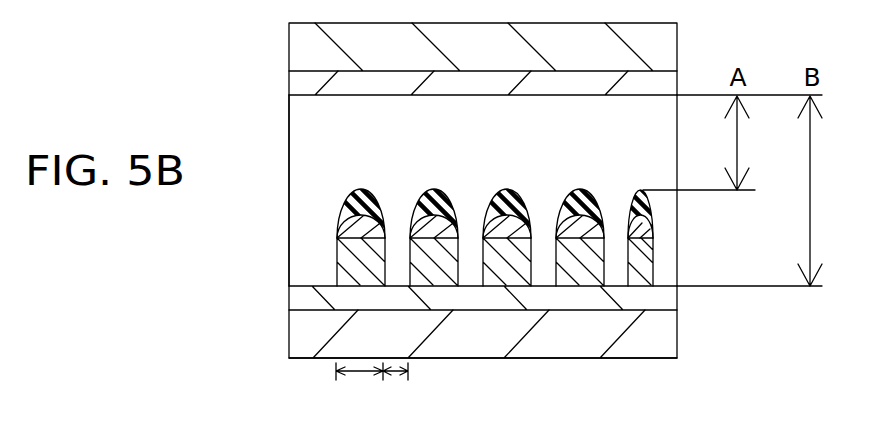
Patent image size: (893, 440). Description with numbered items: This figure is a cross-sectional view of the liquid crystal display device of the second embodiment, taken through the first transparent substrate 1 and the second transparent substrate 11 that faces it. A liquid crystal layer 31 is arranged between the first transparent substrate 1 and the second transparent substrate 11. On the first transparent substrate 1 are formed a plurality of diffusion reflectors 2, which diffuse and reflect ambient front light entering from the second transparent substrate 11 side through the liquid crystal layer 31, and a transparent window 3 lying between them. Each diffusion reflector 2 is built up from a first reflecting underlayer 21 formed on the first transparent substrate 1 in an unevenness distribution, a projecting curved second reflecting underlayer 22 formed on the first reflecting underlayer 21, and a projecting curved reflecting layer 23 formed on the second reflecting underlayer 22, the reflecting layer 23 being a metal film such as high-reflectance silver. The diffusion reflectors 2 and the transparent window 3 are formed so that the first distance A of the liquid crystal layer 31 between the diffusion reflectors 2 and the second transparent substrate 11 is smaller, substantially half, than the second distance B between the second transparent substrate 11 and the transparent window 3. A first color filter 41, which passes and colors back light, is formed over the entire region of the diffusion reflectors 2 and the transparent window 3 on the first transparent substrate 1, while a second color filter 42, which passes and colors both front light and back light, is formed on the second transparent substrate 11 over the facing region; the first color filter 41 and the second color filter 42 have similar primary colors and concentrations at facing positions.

The first transparent substrate 1 is at (302, 340).
The diffusion reflector 2 is at (359, 389).
The transparent window 3 is at (395, 389).
The second transparent substrate 11 is at (308, 48).
The first reflecting underlayer 21 is at (347, 262).
The second reflecting underlayer 22 is at (338, 229).
The reflecting layer 23 is at (343, 201).
The liquid crystal layer 31 is at (308, 134).
The first color filter 41 is at (300, 299).
The second color filter 42 is at (308, 85).